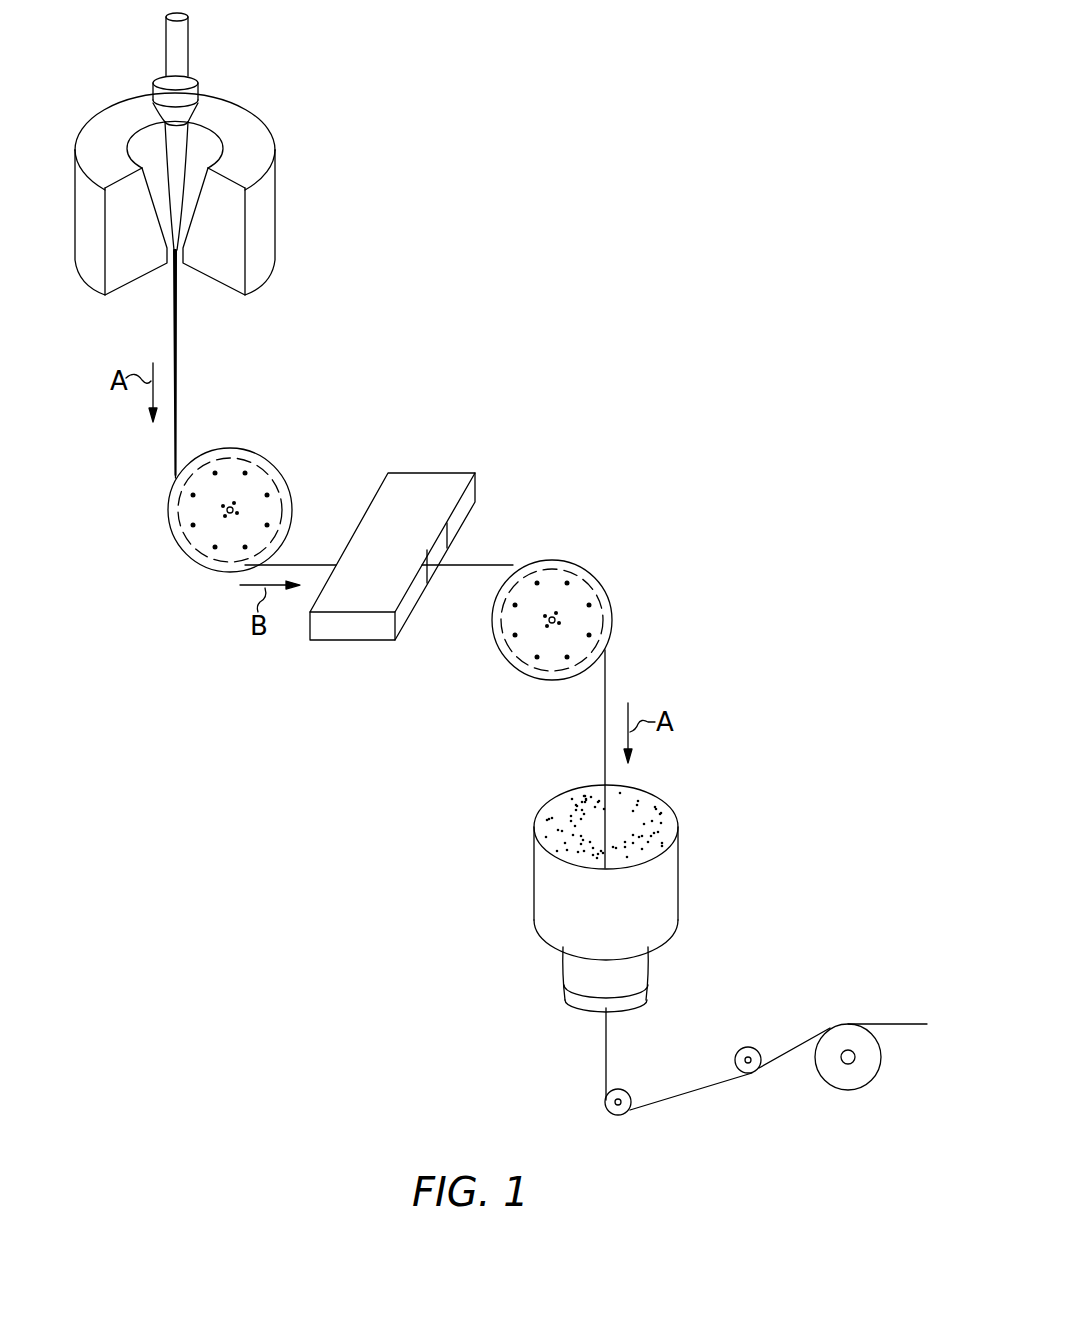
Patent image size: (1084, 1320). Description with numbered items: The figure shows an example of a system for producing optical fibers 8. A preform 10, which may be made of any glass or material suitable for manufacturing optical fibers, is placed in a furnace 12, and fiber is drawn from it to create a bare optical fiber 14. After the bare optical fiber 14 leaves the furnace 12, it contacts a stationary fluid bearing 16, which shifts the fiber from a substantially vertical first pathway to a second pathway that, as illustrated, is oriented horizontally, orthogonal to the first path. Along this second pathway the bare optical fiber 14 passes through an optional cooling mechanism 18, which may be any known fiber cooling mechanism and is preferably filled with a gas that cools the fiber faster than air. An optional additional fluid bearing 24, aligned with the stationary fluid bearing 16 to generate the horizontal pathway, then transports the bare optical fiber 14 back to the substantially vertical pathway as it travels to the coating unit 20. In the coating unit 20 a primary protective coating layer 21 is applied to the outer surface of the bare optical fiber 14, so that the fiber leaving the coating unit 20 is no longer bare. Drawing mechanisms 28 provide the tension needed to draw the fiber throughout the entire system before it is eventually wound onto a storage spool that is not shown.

The system for producing optical fibers 8 is at (497, 201).
The preform 10 is at (180, 150).
The furnace 12 is at (276, 147).
The bare optical fiber 14 is at (177, 405).
The stationary fluid bearing 16 is at (260, 453).
The cooling mechanism 18 is at (428, 478).
The coating unit 20 is at (679, 858).
The primary protective coating layer 21 is at (607, 1050).
The additional fluid bearing 24 is at (580, 563).
The drawing mechanisms 28 is at (614, 1116).